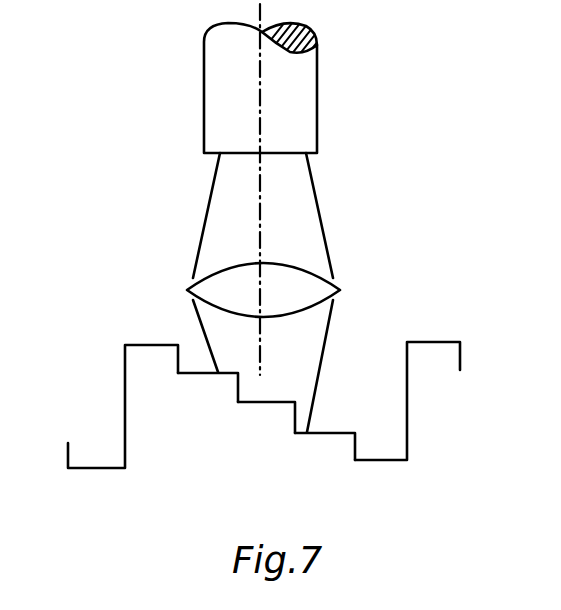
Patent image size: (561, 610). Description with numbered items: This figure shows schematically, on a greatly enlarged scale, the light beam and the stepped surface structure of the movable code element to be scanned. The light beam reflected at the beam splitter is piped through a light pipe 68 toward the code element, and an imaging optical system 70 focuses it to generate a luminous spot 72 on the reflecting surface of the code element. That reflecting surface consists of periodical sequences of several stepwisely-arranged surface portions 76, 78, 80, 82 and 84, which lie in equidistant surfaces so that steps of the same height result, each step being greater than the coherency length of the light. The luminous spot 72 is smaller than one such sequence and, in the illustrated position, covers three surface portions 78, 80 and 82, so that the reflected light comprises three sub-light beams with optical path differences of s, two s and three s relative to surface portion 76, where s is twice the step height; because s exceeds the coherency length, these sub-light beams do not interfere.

The light pipe 68 is at (303, 113).
The imaging optical system 70 is at (305, 273).
The luminous spot 72 is at (281, 399).
The surface portion 76 is at (150, 343).
The surface portion 78 is at (198, 375).
The surface portion 80 is at (259, 403).
The surface portion 82 is at (340, 433).
The surface portion 84 is at (385, 461).